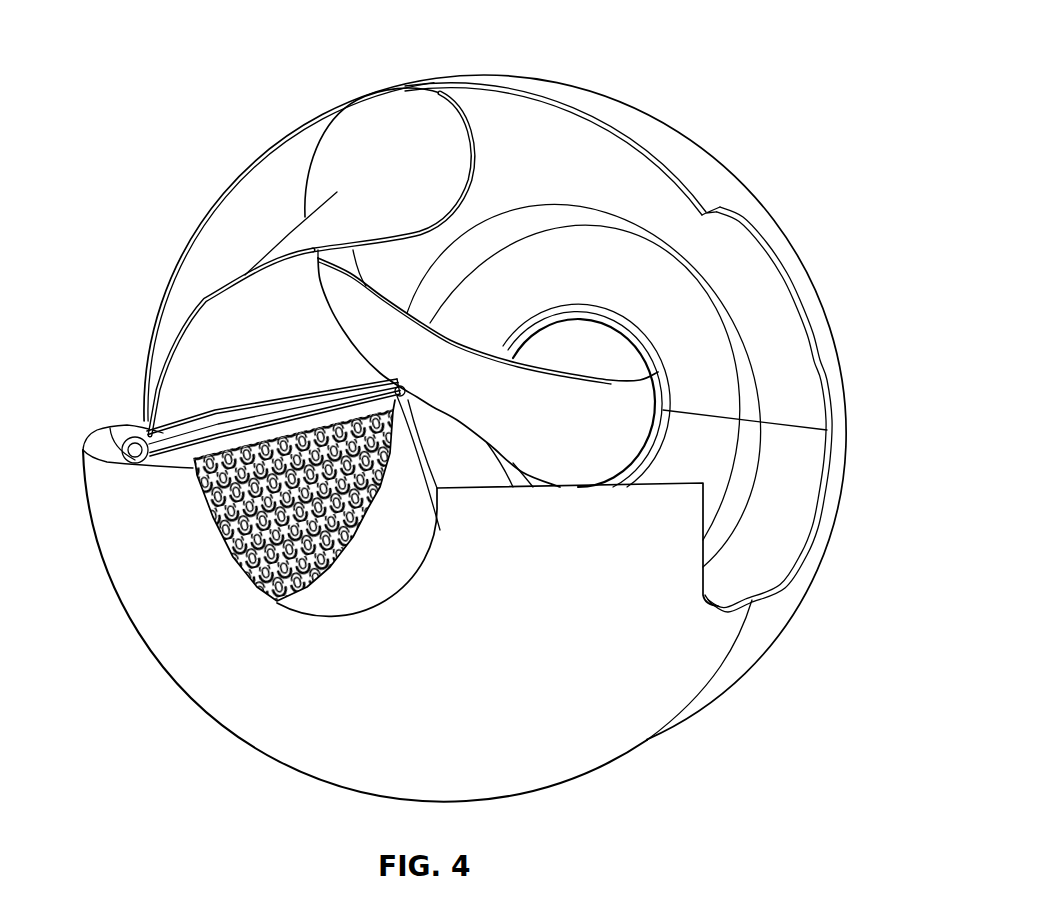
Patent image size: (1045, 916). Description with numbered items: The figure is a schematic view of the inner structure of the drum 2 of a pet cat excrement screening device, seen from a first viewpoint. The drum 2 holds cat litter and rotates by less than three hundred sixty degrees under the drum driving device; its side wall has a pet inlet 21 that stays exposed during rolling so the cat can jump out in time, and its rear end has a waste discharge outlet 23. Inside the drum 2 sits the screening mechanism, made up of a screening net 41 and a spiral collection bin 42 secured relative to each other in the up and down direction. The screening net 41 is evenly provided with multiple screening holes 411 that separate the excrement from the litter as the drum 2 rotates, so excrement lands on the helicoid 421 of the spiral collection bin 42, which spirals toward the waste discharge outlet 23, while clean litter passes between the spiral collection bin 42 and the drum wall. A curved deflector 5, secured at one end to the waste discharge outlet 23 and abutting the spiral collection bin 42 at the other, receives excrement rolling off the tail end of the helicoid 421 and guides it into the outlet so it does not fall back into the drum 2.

The drum 2 is at (245, 668).
The pet inlet 21 is at (750, 548).
The waste discharge outlet 23 is at (572, 337).
The screening net 41 is at (233, 437).
The screening holes 411 is at (223, 550).
The spiral collection bin 42 is at (320, 220).
The helicoid 421 is at (257, 313).
The deflector 5 is at (607, 417).